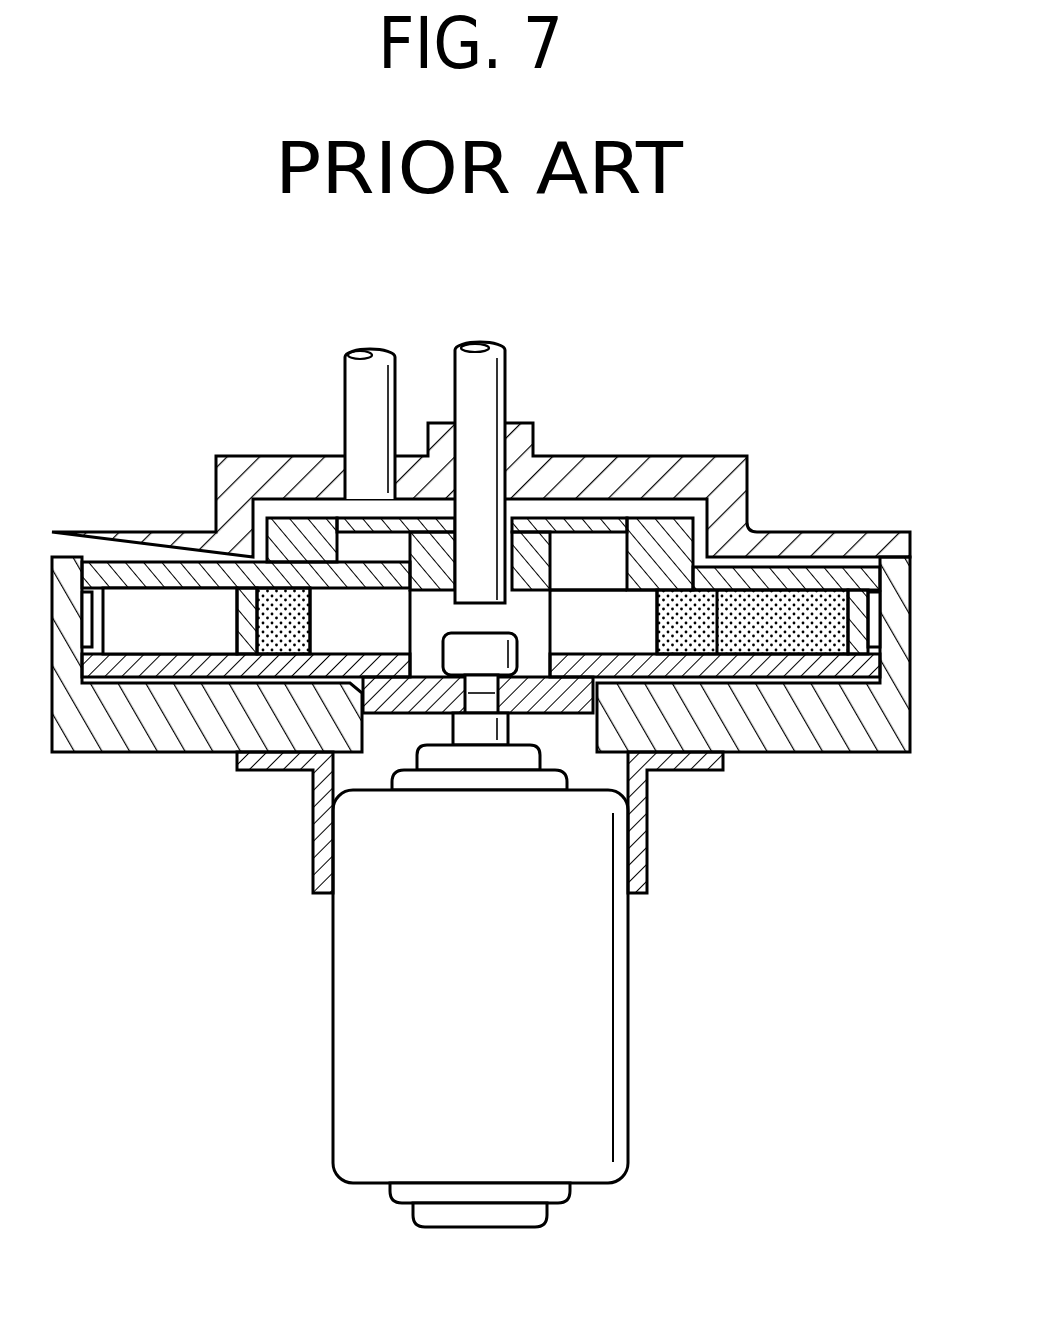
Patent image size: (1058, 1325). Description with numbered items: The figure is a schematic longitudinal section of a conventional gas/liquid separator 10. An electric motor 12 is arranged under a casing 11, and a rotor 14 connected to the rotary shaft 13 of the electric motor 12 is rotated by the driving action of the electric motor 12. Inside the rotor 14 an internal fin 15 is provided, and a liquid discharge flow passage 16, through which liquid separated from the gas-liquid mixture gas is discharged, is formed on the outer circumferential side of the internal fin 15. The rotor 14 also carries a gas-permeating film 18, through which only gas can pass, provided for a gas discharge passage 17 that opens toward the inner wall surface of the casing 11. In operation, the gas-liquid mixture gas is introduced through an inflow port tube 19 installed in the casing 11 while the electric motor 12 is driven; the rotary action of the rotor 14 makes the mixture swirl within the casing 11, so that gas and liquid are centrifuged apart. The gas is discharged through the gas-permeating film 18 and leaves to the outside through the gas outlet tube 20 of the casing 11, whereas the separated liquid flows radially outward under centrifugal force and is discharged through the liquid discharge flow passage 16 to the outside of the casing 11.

The gas/liquid separator 10 is at (500, 770).
The casing 11 is at (148, 723).
The electric motor 12 is at (580, 945).
The rotary shaft 13 is at (500, 693).
The rotor 14 is at (163, 567).
The internal fin 15 is at (607, 637).
The liquid discharge flow passage 16 is at (790, 633).
The gas discharge passage 17 is at (600, 562).
The gas-permeating film 18 is at (360, 518).
The inflow port tube 19 is at (483, 367).
The gas outlet tube 20 is at (367, 388).